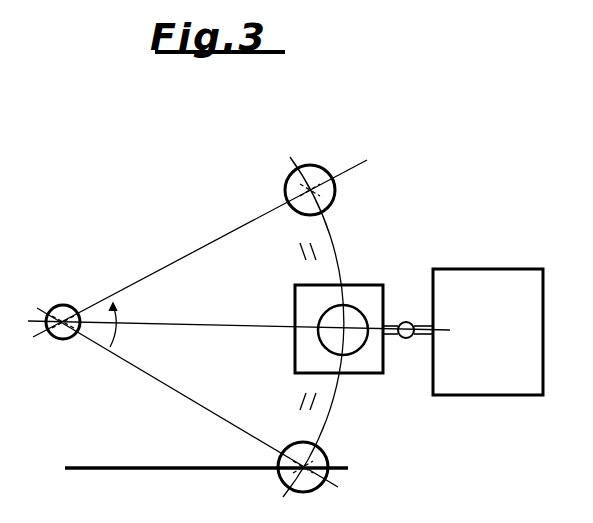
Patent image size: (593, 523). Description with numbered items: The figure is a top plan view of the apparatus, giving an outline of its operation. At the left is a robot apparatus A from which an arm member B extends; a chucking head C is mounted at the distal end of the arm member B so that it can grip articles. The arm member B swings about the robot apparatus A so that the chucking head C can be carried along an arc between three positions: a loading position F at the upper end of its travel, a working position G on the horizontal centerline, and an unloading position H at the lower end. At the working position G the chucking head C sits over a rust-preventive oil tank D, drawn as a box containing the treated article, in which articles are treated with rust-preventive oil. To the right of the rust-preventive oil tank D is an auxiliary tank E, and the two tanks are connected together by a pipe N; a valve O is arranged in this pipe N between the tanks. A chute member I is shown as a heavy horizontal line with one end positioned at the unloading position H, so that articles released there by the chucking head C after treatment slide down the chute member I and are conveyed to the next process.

The robot apparatus A is at (65, 304).
The arm member B is at (202, 247).
The chucking head C is at (321, 165).
The rust-preventive oil tank D is at (363, 285).
The auxiliary tank E is at (488, 305).
The loading position F is at (378, 151).
The working position G is at (228, 326).
The unloading position H is at (203, 412).
The chute member I is at (117, 466).
The pipe N is at (420, 340).
The valve O is at (405, 322).